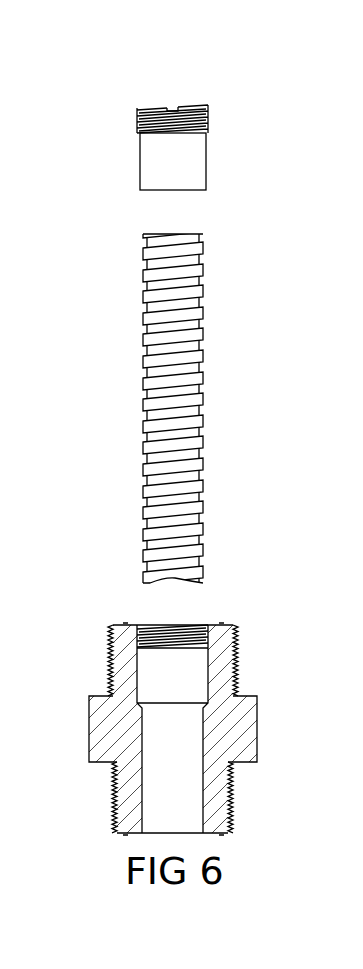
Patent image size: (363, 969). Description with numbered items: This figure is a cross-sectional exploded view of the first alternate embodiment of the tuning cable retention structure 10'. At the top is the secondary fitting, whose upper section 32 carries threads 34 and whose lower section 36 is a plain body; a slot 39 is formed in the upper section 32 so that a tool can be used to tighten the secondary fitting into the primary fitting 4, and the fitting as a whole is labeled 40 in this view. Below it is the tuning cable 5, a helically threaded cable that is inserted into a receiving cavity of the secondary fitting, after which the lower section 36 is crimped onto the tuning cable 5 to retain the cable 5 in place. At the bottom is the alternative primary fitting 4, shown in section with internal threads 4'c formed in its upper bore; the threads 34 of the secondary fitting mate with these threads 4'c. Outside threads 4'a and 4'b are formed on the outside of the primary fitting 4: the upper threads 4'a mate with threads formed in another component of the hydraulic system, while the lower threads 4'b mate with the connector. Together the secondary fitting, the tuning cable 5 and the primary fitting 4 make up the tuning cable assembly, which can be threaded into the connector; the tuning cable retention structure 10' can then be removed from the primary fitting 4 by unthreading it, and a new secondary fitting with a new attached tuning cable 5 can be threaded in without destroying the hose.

The tuning cable retention structure 10' is at (176, 126).
The upper section 32 is at (180, 125).
The threads 34 is at (211, 117).
The lower section 36 is at (200, 163).
The slot 39 is at (170, 106).
The plug body 40 is at (159, 159).
The tuning cable 5 is at (197, 382).
The primary fitting 4 is at (181, 720).
The outside threads 4'a is at (200, 660).
The outside threads 4'b is at (140, 797).
The threads 4'c is at (183, 621).